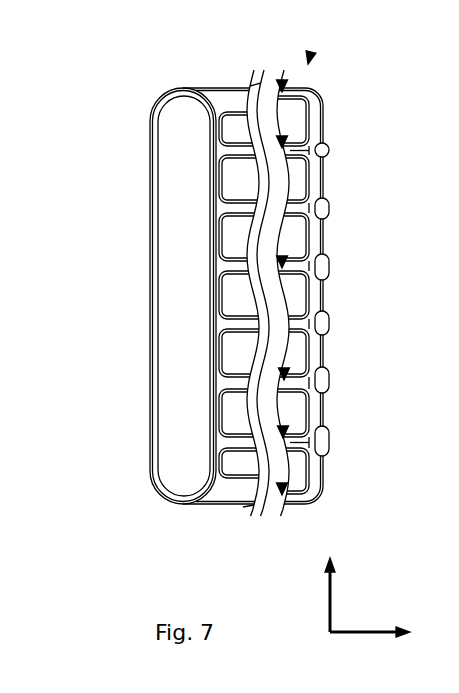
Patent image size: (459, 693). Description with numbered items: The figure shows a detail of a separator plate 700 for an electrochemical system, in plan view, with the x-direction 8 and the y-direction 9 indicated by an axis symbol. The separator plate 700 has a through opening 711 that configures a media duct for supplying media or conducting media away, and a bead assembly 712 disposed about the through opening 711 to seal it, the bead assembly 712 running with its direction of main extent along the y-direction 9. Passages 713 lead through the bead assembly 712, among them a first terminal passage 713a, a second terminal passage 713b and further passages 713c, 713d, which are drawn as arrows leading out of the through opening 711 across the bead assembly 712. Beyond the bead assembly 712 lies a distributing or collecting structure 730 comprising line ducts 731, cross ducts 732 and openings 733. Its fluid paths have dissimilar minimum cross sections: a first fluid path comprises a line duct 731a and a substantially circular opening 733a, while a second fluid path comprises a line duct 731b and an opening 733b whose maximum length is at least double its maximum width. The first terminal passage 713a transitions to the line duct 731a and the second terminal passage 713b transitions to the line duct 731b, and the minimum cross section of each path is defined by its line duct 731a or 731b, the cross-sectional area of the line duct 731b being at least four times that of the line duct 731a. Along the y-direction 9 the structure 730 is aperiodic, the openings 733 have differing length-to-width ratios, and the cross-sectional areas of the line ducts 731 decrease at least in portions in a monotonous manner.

The separator plate 700 is at (310, 54).
The through opening 711 is at (198, 293).
The bead assembly 712 is at (267, 498).
The passages 713 is at (282, 257).
The first terminal passage 713a is at (281, 81).
The second terminal passage 713b is at (282, 484).
The passage 713c is at (282, 137).
The passage 713d is at (283, 427).
The distributing or collecting structure 730 is at (402, 471).
The line ducts 731 is at (292, 207).
The line duct 731a is at (293, 151).
The line duct 731b is at (296, 446).
The cross ducts 732 is at (313, 183).
The openings 733 is at (329, 209).
The opening 733a is at (329, 150).
The opening 733b is at (324, 450).
The x-direction 8 is at (362, 630).
The y-direction 9 is at (330, 596).